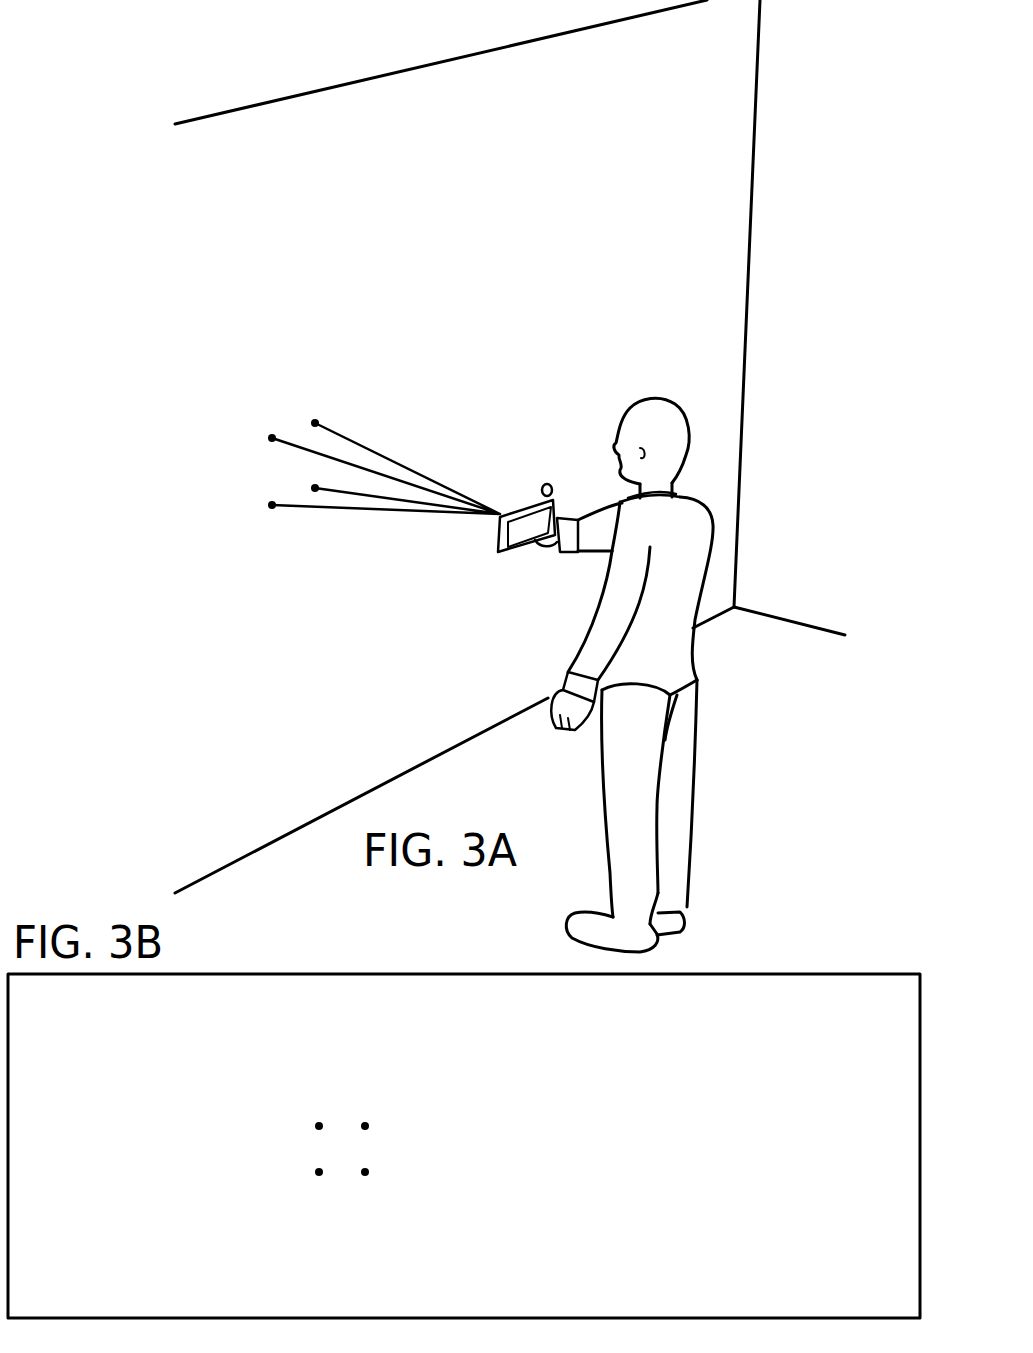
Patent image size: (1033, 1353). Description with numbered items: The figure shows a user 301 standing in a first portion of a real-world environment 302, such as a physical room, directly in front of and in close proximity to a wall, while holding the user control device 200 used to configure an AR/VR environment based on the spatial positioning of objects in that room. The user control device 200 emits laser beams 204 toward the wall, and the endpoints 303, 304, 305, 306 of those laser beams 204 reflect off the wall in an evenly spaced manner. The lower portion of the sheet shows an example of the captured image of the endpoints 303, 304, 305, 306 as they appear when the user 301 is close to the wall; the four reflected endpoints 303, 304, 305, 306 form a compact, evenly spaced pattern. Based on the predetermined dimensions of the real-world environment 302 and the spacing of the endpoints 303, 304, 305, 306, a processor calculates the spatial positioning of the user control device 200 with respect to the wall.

In FIG. 3A, the user control device 200 is at (495, 560).
In FIG. 3A, the laser beams 204 is at (402, 460).
In FIG. 3A, the user 301 is at (700, 406).
In FIG. 3A, the real-world environment 302 is at (162, 98).
In FIG. 3A, the endpoint 303 is at (272, 438).
In FIG. 3B, the endpoint 303 is at (319, 1126).
In FIG. 3A, the endpoint 304 is at (272, 505).
In FIG. 3B, the endpoint 304 is at (319, 1172).
In FIG. 3A, the endpoint 305 is at (315, 488).
In FIG. 3B, the endpoint 305 is at (365, 1172).
In FIG. 3A, the endpoint 306 is at (315, 423).
In FIG. 3B, the endpoint 306 is at (365, 1126).